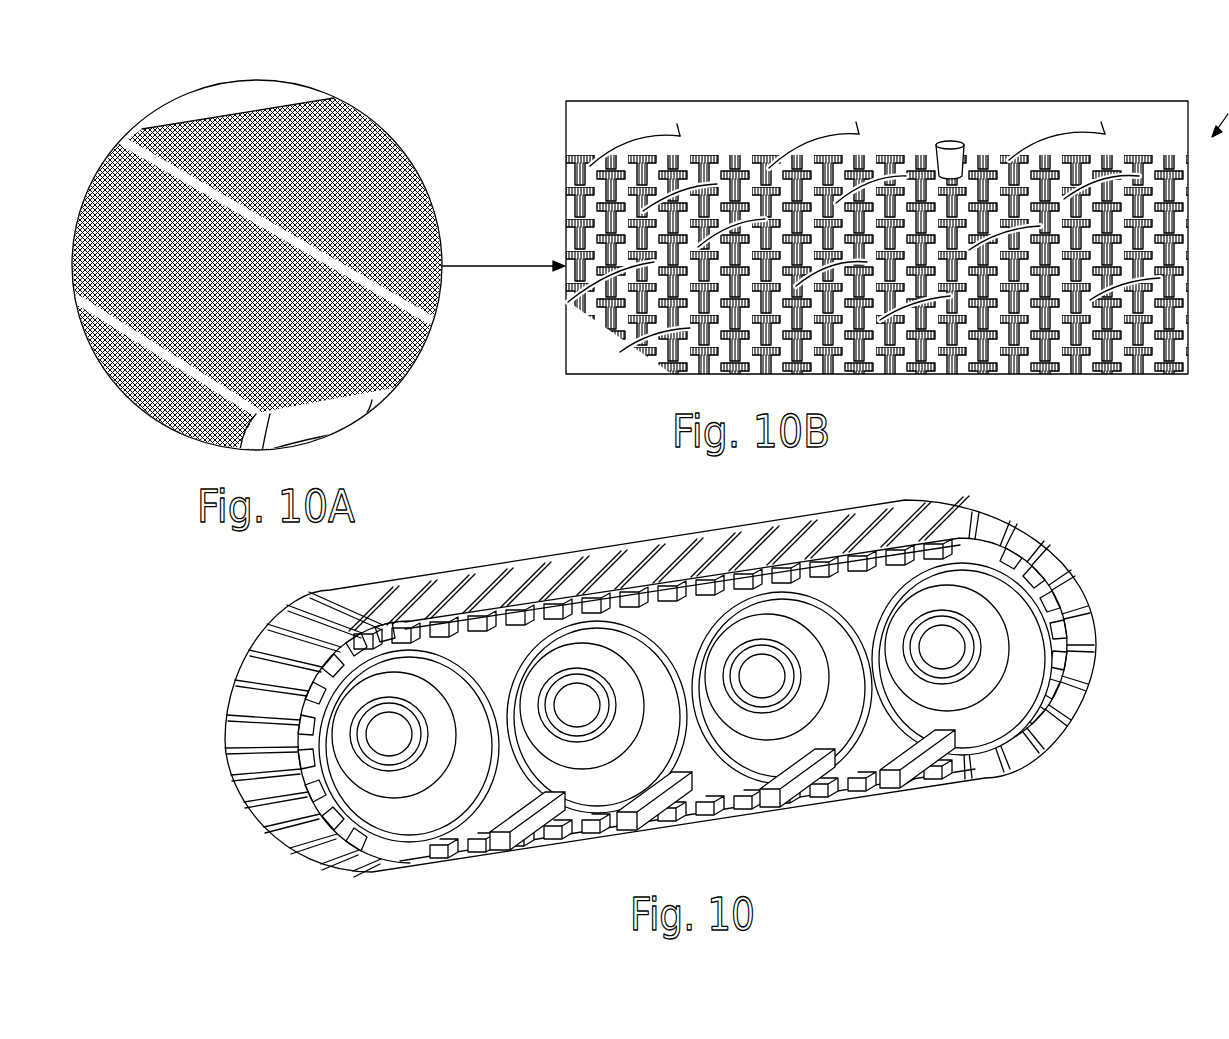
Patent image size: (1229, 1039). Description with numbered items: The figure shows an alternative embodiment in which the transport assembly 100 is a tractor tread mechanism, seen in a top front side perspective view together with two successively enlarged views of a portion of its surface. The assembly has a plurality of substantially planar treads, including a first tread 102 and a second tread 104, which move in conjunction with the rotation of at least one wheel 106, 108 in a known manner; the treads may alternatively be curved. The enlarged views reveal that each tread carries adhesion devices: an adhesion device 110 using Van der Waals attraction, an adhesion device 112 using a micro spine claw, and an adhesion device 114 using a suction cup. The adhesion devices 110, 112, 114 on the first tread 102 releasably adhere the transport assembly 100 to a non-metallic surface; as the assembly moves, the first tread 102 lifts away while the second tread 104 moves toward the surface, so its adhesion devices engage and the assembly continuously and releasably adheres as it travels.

In FIG. 10, the transport assembly 100 is at (703, 695).
In FIG. 10A, the first tread 102 is at (108, 165).
In FIG. 10, the first tread 102 is at (967, 785).
In FIG. 10A, the second tread 104 is at (378, 127).
In FIG. 10, the second tread 104 is at (1043, 755).
In FIG. 10, the wheel 106 is at (792, 757).
In FIG. 10, the wheel 108 is at (410, 803).
In FIG. 10B, the adhesion device 110 is at (935, 378).
In FIG. 10B, the adhesion device 112 is at (816, 136).
In FIG. 10B, the adhesion device 114 is at (940, 142).